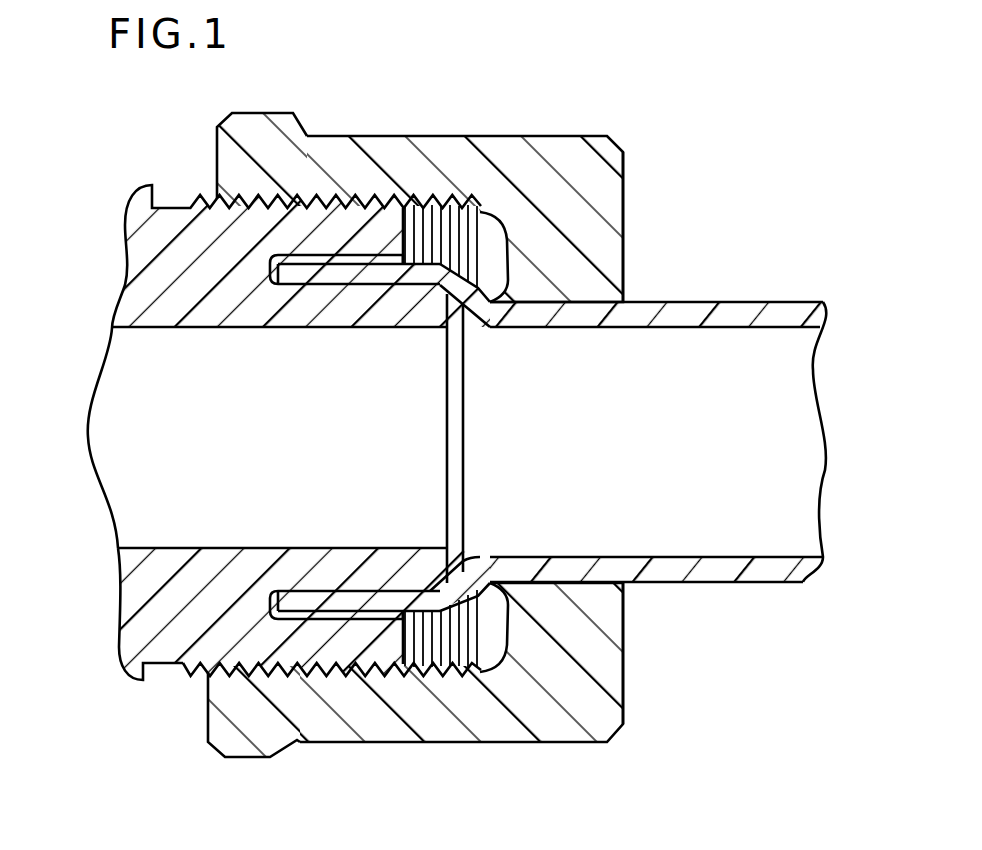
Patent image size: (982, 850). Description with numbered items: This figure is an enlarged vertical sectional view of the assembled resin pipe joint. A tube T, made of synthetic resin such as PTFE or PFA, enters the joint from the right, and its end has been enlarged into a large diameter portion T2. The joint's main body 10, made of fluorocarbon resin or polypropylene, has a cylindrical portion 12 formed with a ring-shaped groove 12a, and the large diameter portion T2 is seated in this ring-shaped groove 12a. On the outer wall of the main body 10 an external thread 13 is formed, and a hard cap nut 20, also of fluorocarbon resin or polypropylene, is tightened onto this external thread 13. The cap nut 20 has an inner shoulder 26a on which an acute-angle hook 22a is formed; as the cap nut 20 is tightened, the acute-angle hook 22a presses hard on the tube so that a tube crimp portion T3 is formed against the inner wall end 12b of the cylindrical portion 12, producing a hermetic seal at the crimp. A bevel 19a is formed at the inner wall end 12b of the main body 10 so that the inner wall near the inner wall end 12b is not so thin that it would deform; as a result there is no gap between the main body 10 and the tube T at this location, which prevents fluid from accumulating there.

The main body 10 is at (213, 298).
The cylindrical portion 12 is at (420, 318).
The ring-shaped groove 12a is at (370, 258).
The inner wall end 12b is at (457, 300).
The external thread 13 is at (213, 195).
The bevel 19a is at (466, 445).
The cap nut 20 is at (323, 743).
The acute-angle hook 22a is at (490, 298).
The inner shoulder 26a is at (565, 235).
The tube T is at (692, 302).
The large diameter portion T2 is at (360, 287).
The tube crimp portion T3 is at (480, 300).